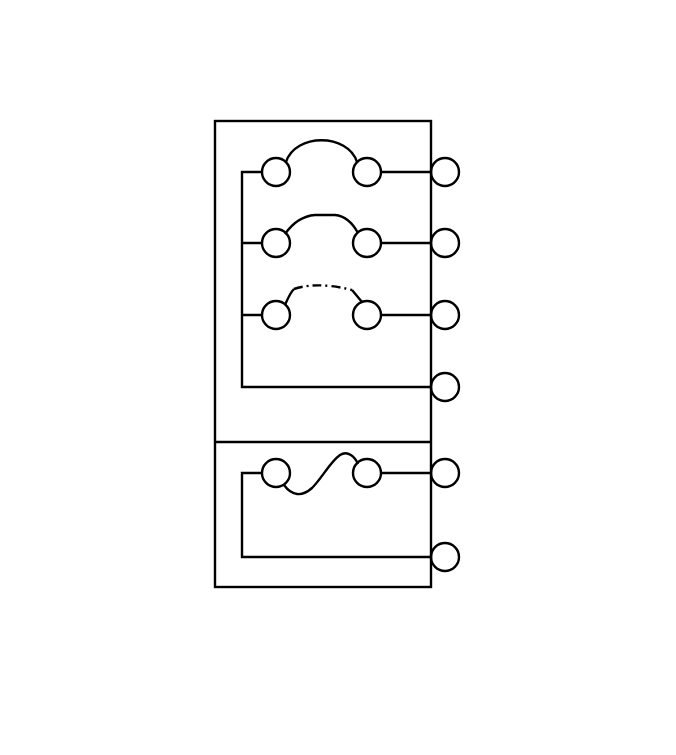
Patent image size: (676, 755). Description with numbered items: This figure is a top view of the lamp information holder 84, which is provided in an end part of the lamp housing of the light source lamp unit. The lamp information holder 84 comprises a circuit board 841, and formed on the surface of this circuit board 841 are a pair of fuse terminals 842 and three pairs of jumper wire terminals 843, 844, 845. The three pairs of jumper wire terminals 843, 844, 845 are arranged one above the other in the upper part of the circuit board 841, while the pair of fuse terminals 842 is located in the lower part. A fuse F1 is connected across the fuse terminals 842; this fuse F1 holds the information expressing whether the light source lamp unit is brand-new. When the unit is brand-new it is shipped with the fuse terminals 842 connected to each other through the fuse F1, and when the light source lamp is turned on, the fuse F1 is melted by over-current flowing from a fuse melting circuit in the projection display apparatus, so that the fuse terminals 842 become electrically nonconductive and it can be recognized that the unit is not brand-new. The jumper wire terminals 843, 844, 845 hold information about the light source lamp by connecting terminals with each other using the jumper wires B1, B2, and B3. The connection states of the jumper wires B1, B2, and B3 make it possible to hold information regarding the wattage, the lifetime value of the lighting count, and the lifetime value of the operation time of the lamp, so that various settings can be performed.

The lamp information holder 84 is at (171, 81).
The circuit board 841 is at (402, 120).
The fuse terminals 842 is at (260, 462).
The jumper wire terminals 843 is at (256, 160).
The jumper wire terminals 844 is at (256, 231).
The jumper wire terminals 845 is at (256, 302).
The jumper wire B1 is at (318, 140).
The jumper wire B2 is at (335, 215).
The jumper wire B3 is at (358, 293).
The fuse F1 is at (322, 483).